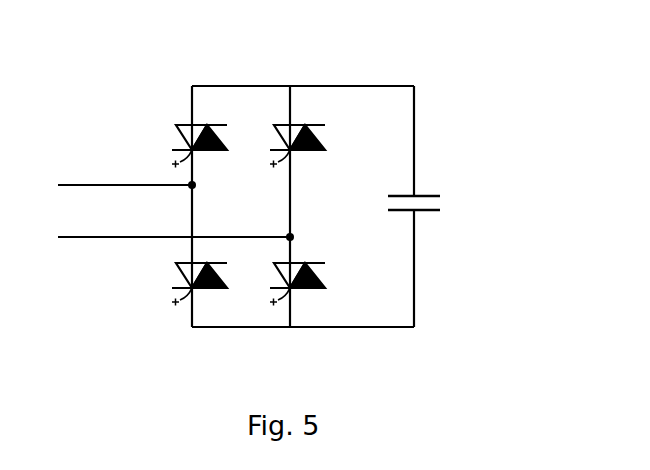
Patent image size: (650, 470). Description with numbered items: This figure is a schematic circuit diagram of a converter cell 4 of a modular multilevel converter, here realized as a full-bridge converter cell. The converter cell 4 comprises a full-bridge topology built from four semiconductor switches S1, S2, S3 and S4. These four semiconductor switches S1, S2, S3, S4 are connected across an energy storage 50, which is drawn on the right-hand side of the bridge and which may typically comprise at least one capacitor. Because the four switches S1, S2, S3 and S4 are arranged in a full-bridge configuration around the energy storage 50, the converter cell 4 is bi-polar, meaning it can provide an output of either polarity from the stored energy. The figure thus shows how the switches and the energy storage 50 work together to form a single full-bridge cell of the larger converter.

The converter cell 4 is at (451, 103).
The semiconductor switch S1 is at (173, 146).
The semiconductor switch S2 is at (172, 284).
The semiconductor switch S3 is at (320, 146).
The semiconductor switch S4 is at (320, 284).
The energy storage 50 is at (434, 212).